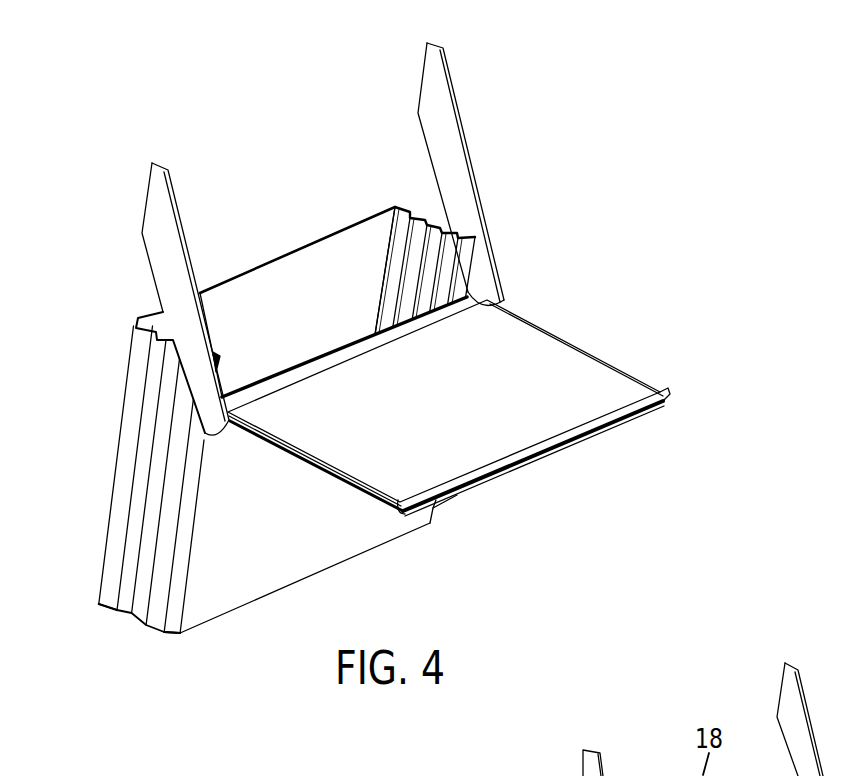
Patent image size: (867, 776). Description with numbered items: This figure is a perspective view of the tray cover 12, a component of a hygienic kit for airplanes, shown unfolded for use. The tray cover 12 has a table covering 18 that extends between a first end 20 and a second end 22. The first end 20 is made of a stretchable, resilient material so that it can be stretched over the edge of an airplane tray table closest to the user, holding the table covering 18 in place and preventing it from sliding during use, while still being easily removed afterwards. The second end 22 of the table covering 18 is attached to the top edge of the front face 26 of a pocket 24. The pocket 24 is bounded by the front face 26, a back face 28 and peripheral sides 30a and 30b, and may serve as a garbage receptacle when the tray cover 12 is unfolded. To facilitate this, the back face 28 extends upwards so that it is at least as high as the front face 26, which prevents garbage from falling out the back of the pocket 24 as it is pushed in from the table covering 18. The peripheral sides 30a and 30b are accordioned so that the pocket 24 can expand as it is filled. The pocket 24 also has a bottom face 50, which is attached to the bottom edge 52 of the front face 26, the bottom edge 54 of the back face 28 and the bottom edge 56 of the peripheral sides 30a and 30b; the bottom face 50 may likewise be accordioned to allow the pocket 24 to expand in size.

The tray cover 12 is at (623, 148).
The table covering 18 is at (545, 365).
The first end 20 is at (560, 450).
The second end 22 is at (360, 342).
The pocket 24 is at (318, 240).
The front face 26 is at (288, 553).
The back face 28 is at (248, 310).
The peripheral side 30a is at (140, 602).
The peripheral side 30b is at (428, 247).
The bottom face 50 is at (113, 603).
The bottom edge of front face 52 is at (350, 560).
The bottom edge of back face 54 is at (100, 602).
The bottom edge of peripheral sides 56 is at (162, 633).